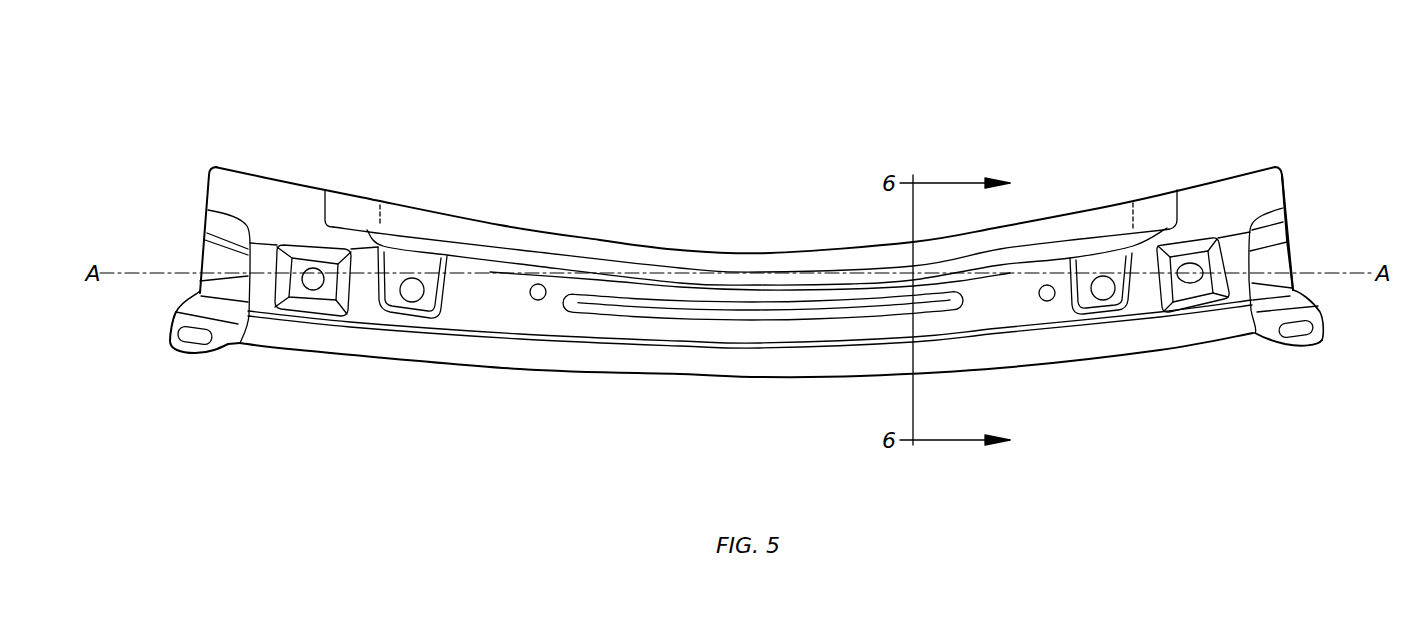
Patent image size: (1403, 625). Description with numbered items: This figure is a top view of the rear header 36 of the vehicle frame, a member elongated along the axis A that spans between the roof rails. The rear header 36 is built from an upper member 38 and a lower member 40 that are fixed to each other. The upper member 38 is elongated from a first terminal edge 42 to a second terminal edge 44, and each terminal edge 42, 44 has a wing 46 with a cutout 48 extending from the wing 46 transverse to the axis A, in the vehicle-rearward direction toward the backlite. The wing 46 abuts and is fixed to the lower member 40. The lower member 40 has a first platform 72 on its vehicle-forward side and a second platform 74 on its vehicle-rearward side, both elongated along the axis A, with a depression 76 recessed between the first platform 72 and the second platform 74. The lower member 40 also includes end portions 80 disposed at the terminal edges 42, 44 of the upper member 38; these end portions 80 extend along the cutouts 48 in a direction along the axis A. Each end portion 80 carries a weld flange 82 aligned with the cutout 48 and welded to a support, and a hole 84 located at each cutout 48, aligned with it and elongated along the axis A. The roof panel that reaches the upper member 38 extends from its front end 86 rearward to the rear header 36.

The rear header 36 is at (1126, 106).
The upper member 38 is at (1167, 352).
The lower member 40 is at (1267, 343).
The first terminal edge 42 is at (205, 230).
The second terminal edge 44 is at (1288, 230).
The wing 46 is at (208, 177).
The cutout 48 is at (200, 282).
The first platform 72 is at (208, 210).
The second platform 74 is at (223, 347).
The depression 76 is at (203, 247).
The end portion 80 is at (193, 293).
The weld flange 82 is at (202, 263).
The hole 84 is at (170, 347).
The front end 86 is at (1300, 345).